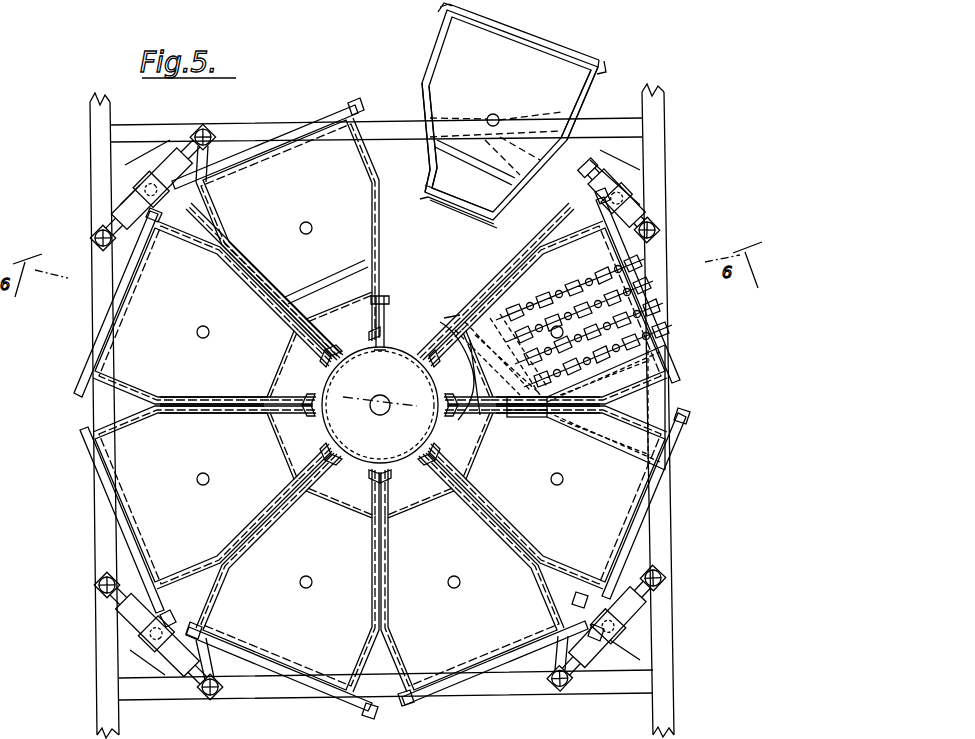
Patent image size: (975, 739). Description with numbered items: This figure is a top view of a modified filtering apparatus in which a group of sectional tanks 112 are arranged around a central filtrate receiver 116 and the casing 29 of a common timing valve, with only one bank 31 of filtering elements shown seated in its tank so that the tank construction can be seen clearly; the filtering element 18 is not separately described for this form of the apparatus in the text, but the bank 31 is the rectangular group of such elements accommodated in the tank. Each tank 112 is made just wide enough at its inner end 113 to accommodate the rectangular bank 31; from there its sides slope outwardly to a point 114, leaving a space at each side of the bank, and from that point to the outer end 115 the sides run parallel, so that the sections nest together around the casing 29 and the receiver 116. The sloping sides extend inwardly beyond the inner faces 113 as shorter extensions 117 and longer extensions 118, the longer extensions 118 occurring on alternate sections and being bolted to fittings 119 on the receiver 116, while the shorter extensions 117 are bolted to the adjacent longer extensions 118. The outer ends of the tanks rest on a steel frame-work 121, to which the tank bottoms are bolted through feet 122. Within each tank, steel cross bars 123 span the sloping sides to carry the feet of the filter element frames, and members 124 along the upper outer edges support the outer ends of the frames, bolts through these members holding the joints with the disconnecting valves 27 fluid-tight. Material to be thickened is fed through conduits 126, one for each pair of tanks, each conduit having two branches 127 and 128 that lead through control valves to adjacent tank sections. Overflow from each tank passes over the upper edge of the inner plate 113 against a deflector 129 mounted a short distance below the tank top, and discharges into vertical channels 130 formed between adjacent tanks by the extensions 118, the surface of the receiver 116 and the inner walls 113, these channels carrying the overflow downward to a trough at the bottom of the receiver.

The conveyor chute 18 is at (640, 352).
The disconnecting valve 27 is at (492, 332).
The casing of the common timing valve 29 is at (497, 409).
The bank of filtering elements 31 is at (568, 302).
The sectional tank 112 is at (462, 50).
The inner end 113 is at (456, 204).
The point 114 is at (424, 84).
The outer end 115 is at (508, 48).
The filtrate receiver 116 is at (362, 466).
The shorter extension 117 is at (428, 180).
The longer extension 118 is at (372, 316).
The fitting 119 is at (432, 366).
The steel frame-work 121 is at (97, 517).
The feet 122 is at (602, 86).
The steel cross bar 123 is at (488, 168).
The member 124 is at (556, 58).
The conduit 126 is at (156, 184).
The branch 127 is at (588, 688).
The branch 128 is at (660, 614).
The deflector 129 is at (490, 217).
The vertical channel 130 is at (300, 390).